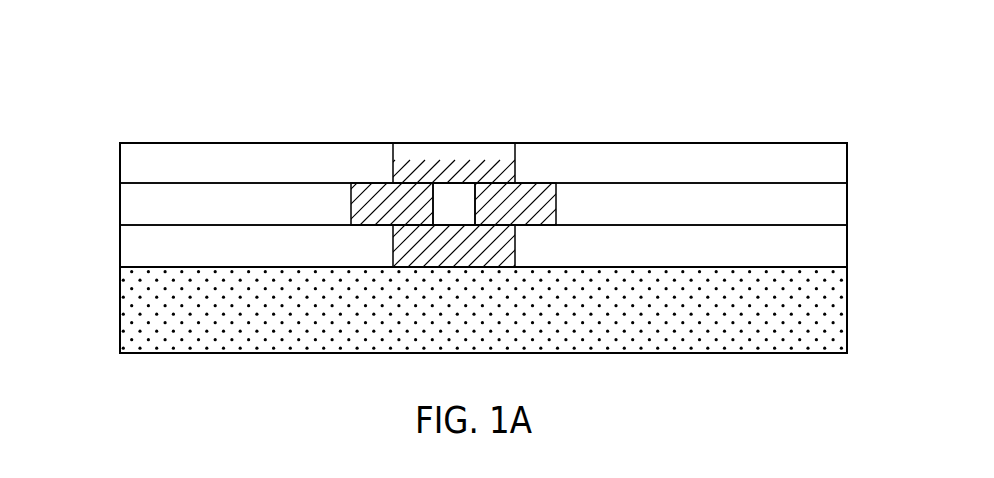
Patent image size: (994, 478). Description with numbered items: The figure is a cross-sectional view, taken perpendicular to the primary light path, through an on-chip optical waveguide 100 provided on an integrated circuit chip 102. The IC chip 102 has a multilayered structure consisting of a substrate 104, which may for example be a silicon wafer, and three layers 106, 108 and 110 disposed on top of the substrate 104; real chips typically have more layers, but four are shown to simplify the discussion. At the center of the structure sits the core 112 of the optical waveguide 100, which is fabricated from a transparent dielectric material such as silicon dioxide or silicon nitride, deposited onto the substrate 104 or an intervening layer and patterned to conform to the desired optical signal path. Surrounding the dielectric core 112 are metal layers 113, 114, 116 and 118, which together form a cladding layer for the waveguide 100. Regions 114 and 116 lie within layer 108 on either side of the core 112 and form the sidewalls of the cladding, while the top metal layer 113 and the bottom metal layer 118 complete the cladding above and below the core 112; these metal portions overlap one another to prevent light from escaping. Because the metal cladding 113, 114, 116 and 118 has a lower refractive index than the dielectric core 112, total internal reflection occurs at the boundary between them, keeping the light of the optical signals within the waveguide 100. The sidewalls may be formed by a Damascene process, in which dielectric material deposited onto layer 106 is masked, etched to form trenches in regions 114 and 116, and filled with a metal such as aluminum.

The on-chip optical waveguide 100 is at (401, 64).
The integrated circuit (IC) chip 102 is at (117, 222).
The substrate 104 is at (750, 345).
The first layer 106 is at (838, 248).
The second layer 108 is at (838, 207).
The third layer 110 is at (838, 163).
The dielectric core 112 is at (446, 201).
The top metal layer 113 is at (510, 164).
The metal cladding sidewall region 114 is at (358, 210).
The metal cladding sidewall region 116 is at (553, 211).
The bottom metal layer 118 is at (505, 257).